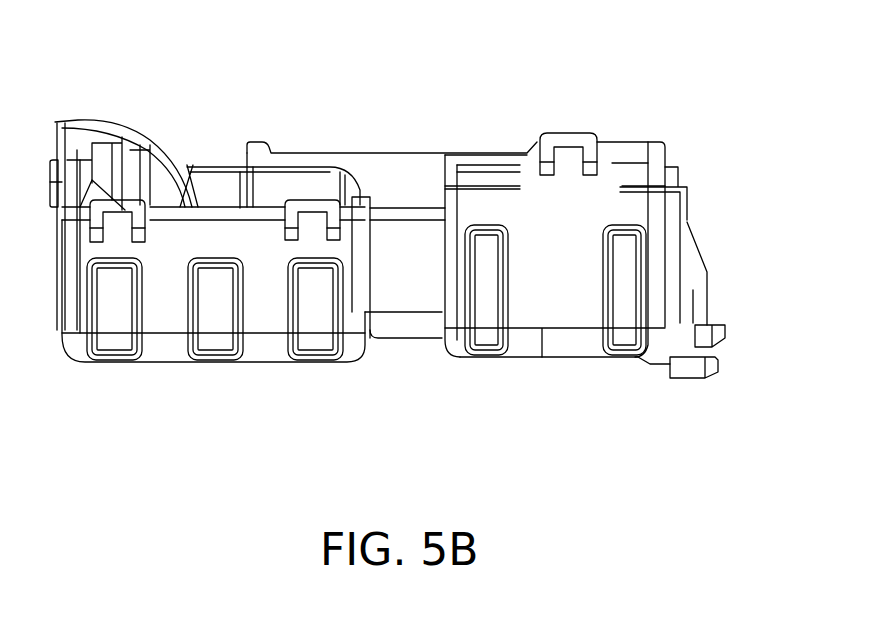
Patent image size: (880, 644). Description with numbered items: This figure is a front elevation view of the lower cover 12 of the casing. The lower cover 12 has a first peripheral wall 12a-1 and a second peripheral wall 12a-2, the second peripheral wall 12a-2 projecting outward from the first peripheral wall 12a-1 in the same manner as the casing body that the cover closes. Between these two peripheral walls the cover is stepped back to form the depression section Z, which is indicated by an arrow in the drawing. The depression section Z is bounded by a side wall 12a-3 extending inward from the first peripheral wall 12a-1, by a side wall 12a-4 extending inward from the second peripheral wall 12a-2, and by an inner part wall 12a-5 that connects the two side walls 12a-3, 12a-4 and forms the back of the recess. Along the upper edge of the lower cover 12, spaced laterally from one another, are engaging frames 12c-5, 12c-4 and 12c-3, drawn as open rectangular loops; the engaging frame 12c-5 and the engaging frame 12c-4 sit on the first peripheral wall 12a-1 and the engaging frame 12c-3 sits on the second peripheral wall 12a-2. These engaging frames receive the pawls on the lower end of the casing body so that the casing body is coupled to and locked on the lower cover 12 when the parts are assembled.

The lower cover 12 is at (714, 126).
The first peripheral wall 12a-1 is at (170, 323).
The second peripheral wall 12a-2 is at (578, 310).
The side wall 12a-3 is at (375, 277).
The side wall 12a-4 is at (425, 278).
The inner part wall 12a-5 is at (408, 240).
The engaging frame 12c-3 is at (573, 136).
The engaging frame 12c-4 is at (312, 205).
The engaging frame 12c-5 is at (118, 162).
The depression section Z is at (433, 364).